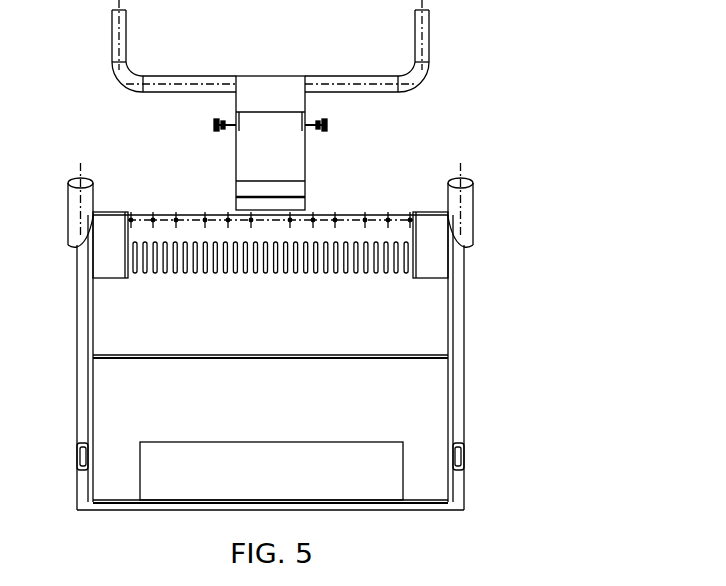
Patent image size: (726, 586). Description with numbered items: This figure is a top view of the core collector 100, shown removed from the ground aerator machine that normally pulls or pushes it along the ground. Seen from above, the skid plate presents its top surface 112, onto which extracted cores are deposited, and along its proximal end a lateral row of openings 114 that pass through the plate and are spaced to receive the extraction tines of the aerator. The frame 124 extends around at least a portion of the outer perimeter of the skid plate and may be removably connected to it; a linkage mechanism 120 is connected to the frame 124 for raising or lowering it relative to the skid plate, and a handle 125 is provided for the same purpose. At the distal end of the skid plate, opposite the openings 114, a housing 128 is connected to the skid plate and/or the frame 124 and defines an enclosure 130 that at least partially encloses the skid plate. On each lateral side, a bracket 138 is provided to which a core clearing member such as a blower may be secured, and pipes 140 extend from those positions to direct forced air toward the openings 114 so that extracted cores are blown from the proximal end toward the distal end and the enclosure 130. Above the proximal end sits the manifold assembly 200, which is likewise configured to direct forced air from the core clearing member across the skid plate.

The core collector 100 is at (548, 146).
The manifold assembly 200 is at (285, 153).
The linkage mechanism 120 is at (460, 334).
The pipes 140 is at (73, 206).
The bracket 138 is at (110, 245).
The openings 114 is at (367, 233).
The top surface 112 is at (284, 320).
The frame 124 is at (93, 330).
The housing 128 is at (427, 398).
The enclosure 130 is at (284, 408).
The handle 125 is at (465, 452).